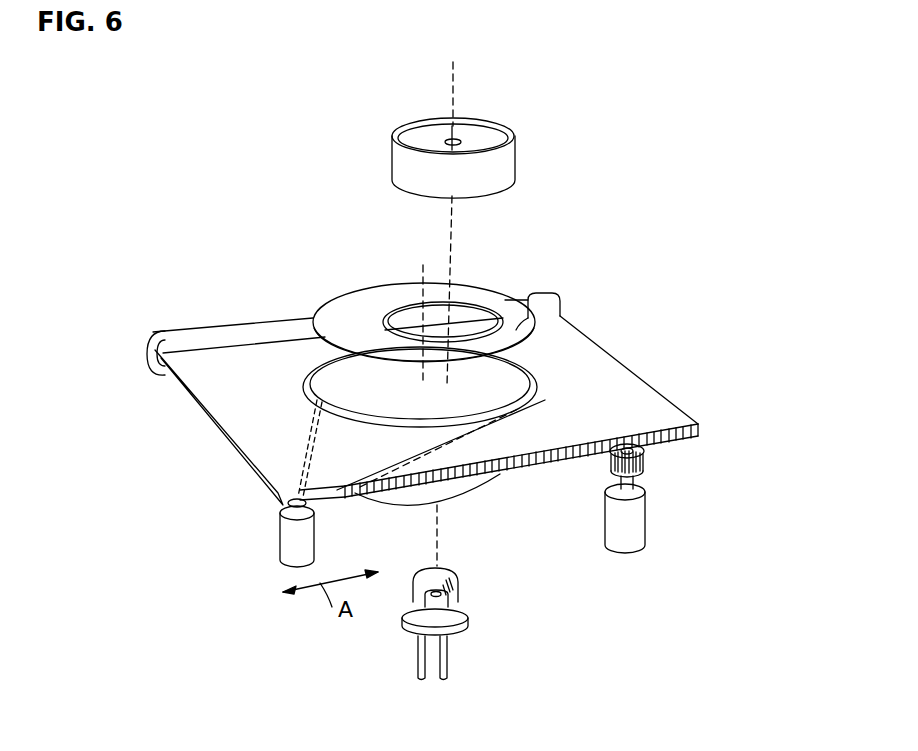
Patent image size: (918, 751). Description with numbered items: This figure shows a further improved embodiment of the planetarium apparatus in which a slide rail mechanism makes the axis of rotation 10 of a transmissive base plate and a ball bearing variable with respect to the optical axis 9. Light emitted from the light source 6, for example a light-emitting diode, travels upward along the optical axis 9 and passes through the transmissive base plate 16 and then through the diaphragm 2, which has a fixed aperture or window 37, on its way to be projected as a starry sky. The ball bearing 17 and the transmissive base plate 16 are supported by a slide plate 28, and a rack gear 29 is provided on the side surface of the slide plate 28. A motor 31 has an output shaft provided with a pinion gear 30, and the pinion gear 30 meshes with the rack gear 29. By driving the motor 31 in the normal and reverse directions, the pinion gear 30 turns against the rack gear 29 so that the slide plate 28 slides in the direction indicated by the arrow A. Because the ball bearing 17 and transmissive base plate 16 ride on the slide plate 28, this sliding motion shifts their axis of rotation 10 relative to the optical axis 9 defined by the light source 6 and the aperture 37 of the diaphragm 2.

The optical axis 9 is at (456, 101).
The axis of rotation 10 is at (416, 277).
The aperture 37 is at (475, 300).
The diaphragm 2 is at (513, 313).
The slide plate 28 is at (237, 335).
The transmissive base plate 16 is at (505, 355).
The ball bearing 17 is at (545, 383).
The rack gear 29 is at (697, 440).
The pinion gear 30 is at (645, 462).
The motor 31 is at (633, 528).
The light source 6 is at (452, 574).